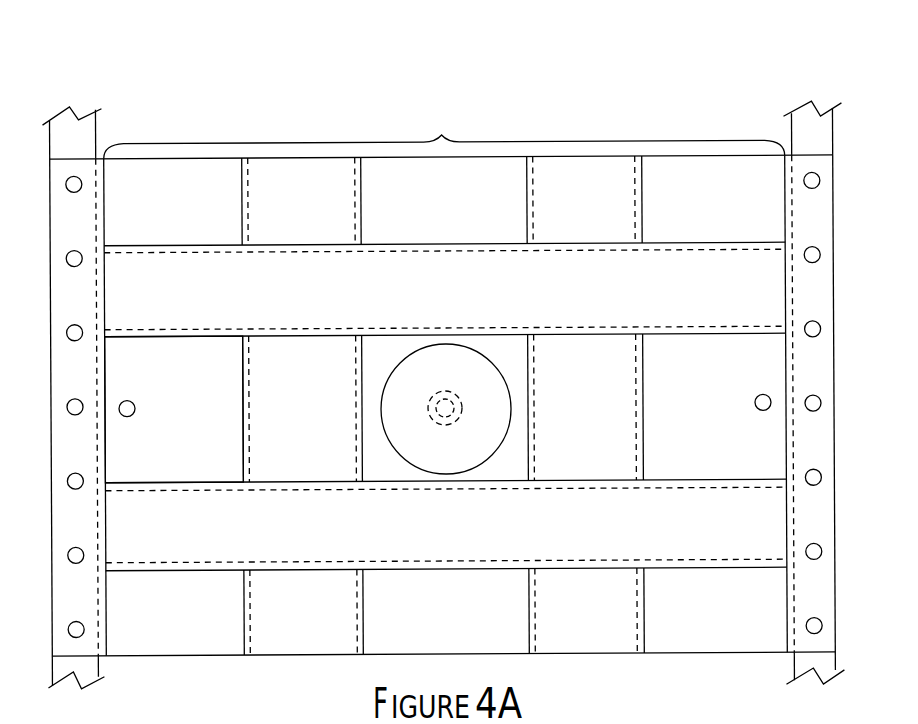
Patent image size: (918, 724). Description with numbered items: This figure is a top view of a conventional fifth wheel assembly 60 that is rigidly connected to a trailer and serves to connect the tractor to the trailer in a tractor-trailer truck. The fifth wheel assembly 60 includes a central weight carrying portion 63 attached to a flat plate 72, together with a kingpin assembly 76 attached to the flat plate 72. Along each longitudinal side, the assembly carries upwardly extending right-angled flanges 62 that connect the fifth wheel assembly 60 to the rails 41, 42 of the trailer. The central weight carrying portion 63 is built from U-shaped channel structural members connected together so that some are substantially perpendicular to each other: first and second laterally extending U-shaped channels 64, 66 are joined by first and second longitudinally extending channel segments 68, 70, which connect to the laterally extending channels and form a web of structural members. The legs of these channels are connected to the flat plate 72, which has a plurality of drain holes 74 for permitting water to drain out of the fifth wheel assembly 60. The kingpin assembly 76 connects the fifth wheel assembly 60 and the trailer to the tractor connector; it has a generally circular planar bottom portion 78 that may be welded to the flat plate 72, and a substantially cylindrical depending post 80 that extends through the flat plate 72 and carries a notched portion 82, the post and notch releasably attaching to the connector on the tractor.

The rail 41 is at (80, 138).
The rail 42 is at (813, 135).
The fifth wheel assembly 60 is at (517, 112).
The right-angled flange 62 is at (93, 241).
The central weight carrying portion 63 is at (443, 132).
The first laterally extending U-shaped channel 64 is at (378, 299).
The second laterally extending U-shaped channel 66 is at (354, 536).
The first longitudinally extending channel segment 68 is at (316, 216).
The second longitudinally extending channel segment 70 is at (603, 215).
The flat plate 72 is at (206, 419).
The drain hole 74 is at (133, 400).
The kingpin assembly 76 is at (444, 406).
The circular planar bottom portion 78 is at (503, 378).
The cylindrical depending post 80 is at (428, 397).
The notched portion 82 is at (455, 397).